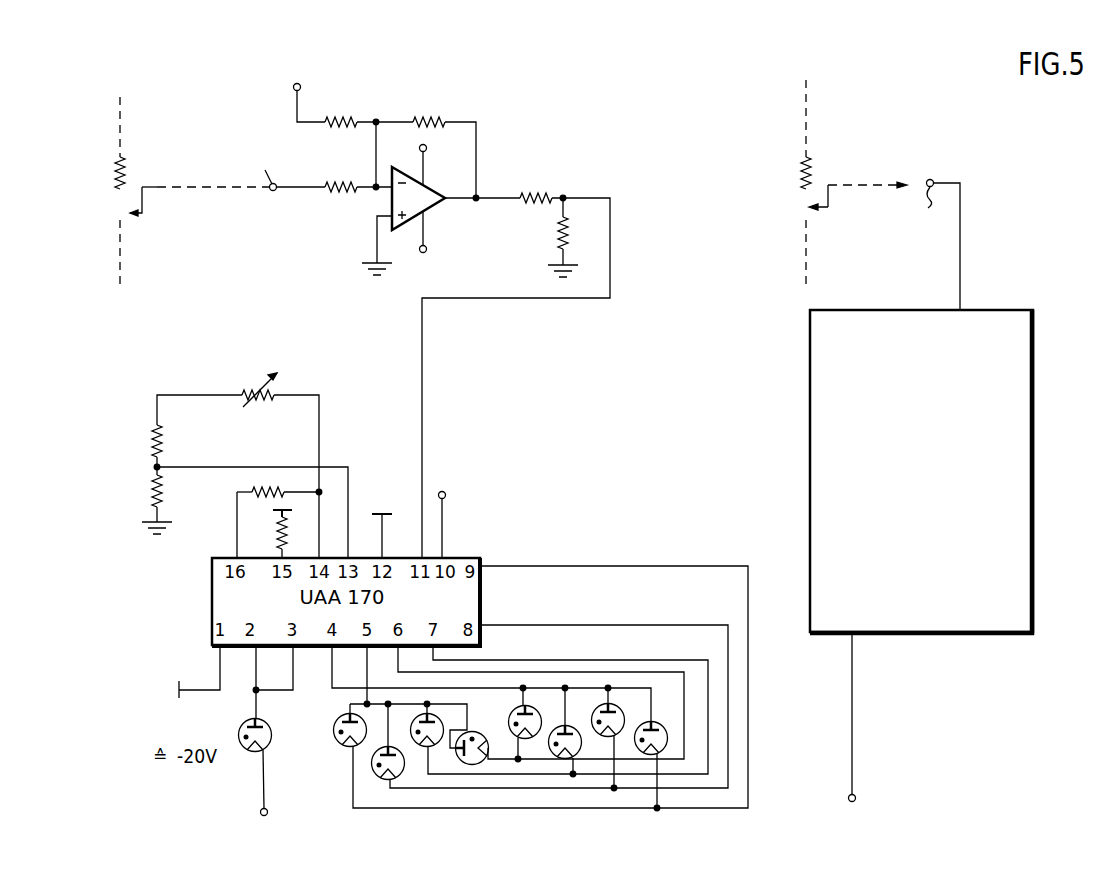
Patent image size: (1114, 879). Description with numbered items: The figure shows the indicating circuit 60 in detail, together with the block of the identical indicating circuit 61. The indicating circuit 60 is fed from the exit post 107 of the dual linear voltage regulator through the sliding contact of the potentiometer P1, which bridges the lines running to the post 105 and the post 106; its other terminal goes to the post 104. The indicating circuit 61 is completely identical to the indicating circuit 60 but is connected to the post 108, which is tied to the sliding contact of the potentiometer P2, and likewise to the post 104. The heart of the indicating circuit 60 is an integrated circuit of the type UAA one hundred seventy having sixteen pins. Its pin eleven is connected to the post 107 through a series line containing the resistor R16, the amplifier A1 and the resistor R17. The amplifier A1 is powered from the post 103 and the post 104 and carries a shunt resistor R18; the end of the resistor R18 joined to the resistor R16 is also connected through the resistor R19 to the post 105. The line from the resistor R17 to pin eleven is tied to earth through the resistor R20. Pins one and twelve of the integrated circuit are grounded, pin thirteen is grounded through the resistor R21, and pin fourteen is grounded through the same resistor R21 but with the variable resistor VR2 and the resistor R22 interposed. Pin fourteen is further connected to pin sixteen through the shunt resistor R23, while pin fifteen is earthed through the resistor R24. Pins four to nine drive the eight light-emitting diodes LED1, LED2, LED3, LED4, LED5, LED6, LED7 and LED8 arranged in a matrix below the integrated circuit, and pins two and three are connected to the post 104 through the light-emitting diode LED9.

The indicating circuit 60 is at (348, 343).
The indicating circuit 61 is at (1028, 480).
The post 103 is at (419, 249).
The post 104 is at (419, 152).
The post 105 is at (480, 187).
The post 106 is at (490, 105).
The exit post 107 is at (254, 168).
The post 108 is at (936, 210).
The potentiometer P1 is at (121, 186).
The potentiometer P2 is at (835, 183).
The amplifier A1 is at (437, 207).
The resistor R16 is at (334, 202).
The resistor R17 is at (516, 361).
The shunt resistor R18 is at (444, 143).
The resistor R19 is at (369, 108).
The resistor R20 is at (576, 237).
The resistor R21 is at (168, 504).
The resistor R22 is at (174, 450).
The shunt resistor R23 is at (277, 486).
The resistor R24 is at (266, 534).
The variable resistor VR2 is at (238, 461).
The light-emitting diode LED1 is at (667, 737).
The light-emitting diode LED2 is at (620, 707).
The light-emitting diode LED3 is at (568, 727).
The light-emitting diode LED4 is at (535, 710).
The light-emitting diode LED5 is at (477, 733).
The light-emitting diode LED6 is at (437, 718).
The light-emitting diode LED7 is at (373, 766).
The light-emitting diode LED8 is at (335, 731).
The light-emitting diode LED9 is at (240, 727).